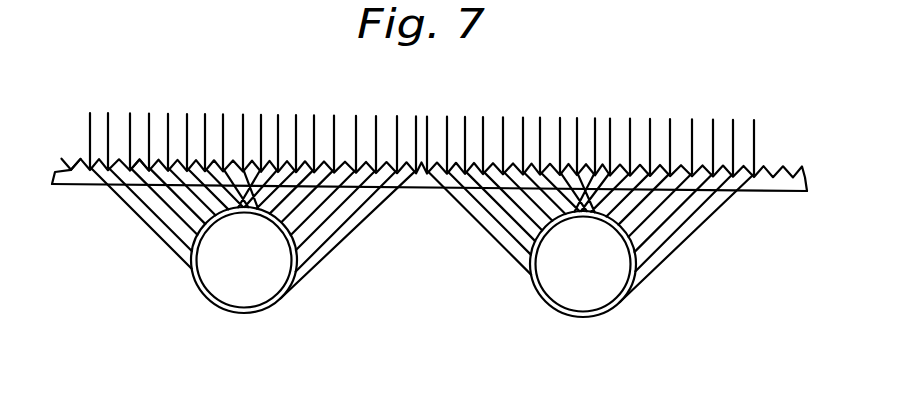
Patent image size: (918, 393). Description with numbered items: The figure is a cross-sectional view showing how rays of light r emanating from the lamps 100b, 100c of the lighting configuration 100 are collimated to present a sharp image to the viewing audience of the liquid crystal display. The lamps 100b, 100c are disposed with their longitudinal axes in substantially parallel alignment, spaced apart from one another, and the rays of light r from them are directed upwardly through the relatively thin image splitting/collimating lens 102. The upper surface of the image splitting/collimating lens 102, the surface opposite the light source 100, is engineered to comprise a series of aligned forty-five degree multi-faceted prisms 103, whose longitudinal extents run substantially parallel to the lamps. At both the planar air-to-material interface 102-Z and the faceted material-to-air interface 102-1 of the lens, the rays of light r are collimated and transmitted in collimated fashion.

The lighting configuration 100 is at (424, 224).
The lamp 100b is at (250, 313).
The lamp 100c is at (578, 318).
The image splitting/collimating lens 102 is at (424, 156).
The faceted material-to-air interface 102-1 is at (140, 162).
The planar air-to-material interface 102-Z is at (80, 187).
The multi-faceted prisms 103 is at (72, 163).
The rays of light r is at (157, 240).